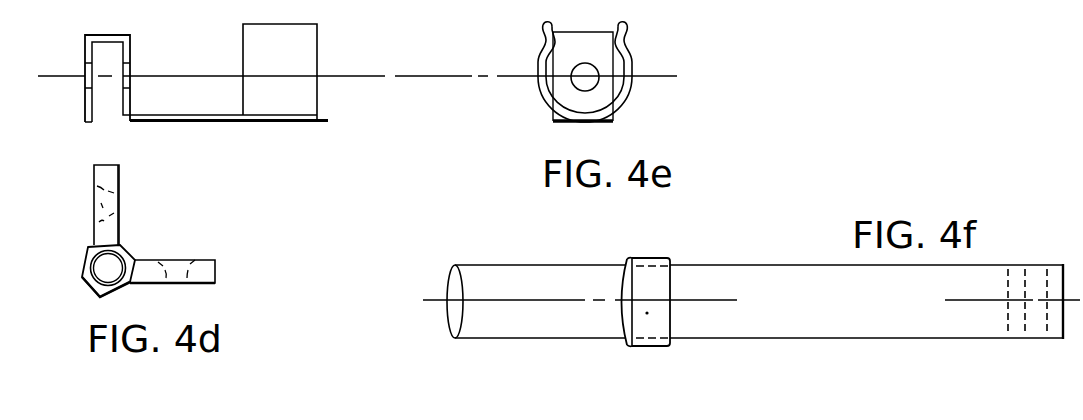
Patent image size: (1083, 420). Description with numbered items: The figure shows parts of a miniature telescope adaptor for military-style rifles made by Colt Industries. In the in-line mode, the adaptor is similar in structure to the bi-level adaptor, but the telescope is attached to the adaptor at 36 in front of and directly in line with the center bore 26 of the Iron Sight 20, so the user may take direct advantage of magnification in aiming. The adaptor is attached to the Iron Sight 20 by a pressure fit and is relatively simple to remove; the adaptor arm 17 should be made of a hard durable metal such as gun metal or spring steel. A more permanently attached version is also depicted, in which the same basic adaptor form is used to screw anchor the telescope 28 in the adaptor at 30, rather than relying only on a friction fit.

In FIG. 4F, the adaptor arm 17 is at (755, 263).
In FIG. 4D, the Iron Sight 20 is at (97, 292).
In FIG. 4D, the center bore 26 is at (93, 211).
In FIG. 4F, the telescope 28 is at (572, 340).
In FIG. 4D, the screw anchor location 30 is at (138, 412).
In FIG. 4F, the screw anchor location 30 is at (653, 348).
In FIG. 4E, the telescope attachment point 36 is at (302, 123).